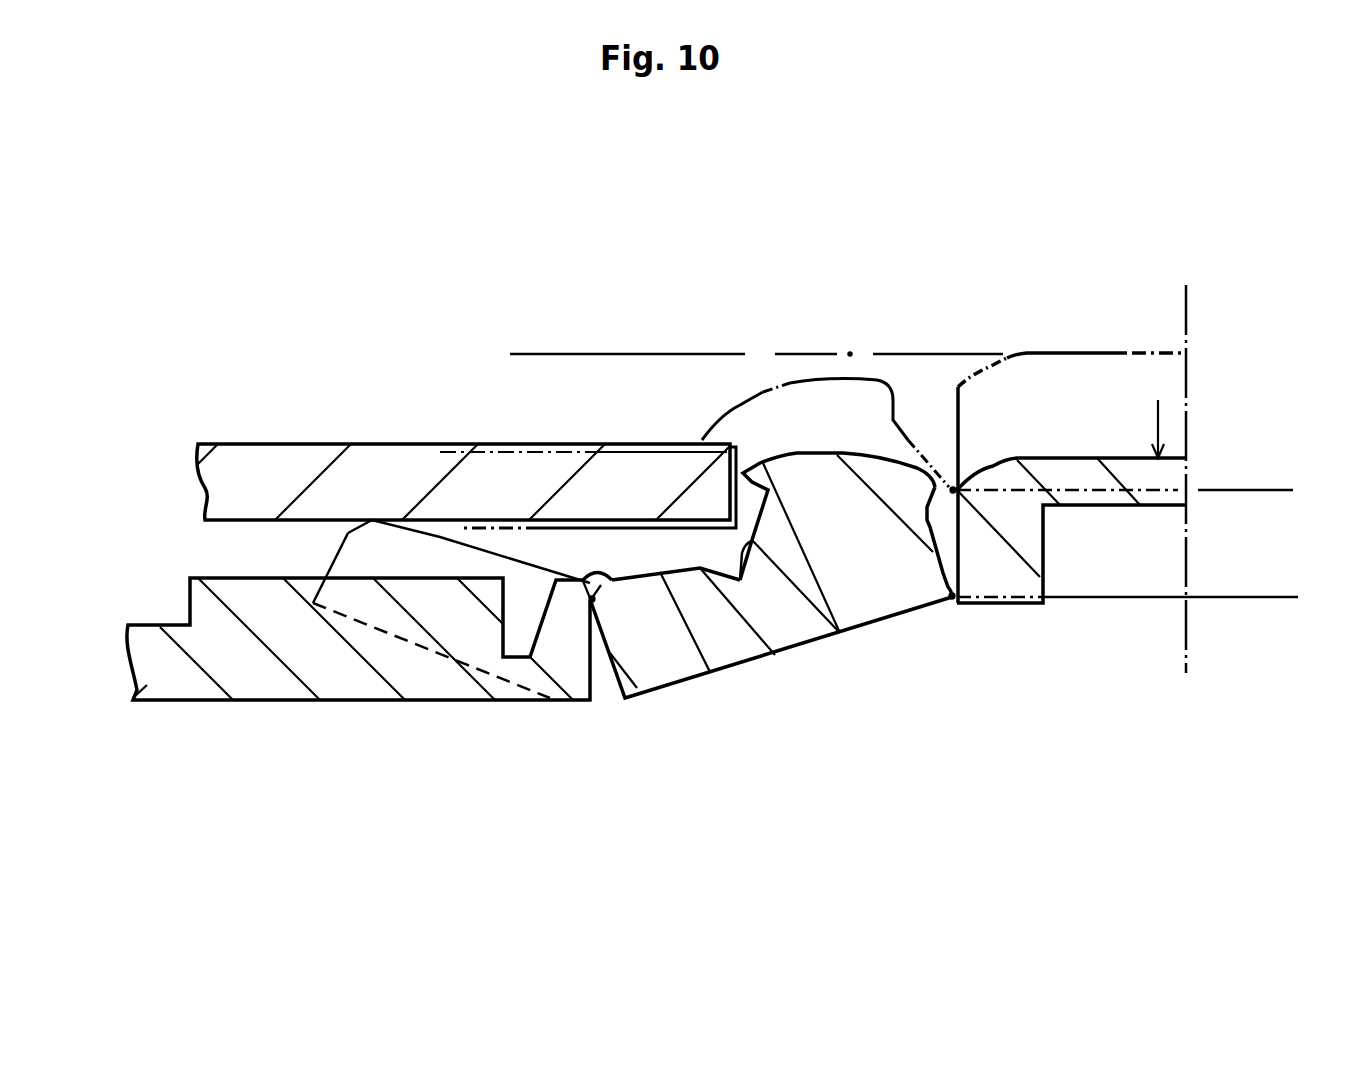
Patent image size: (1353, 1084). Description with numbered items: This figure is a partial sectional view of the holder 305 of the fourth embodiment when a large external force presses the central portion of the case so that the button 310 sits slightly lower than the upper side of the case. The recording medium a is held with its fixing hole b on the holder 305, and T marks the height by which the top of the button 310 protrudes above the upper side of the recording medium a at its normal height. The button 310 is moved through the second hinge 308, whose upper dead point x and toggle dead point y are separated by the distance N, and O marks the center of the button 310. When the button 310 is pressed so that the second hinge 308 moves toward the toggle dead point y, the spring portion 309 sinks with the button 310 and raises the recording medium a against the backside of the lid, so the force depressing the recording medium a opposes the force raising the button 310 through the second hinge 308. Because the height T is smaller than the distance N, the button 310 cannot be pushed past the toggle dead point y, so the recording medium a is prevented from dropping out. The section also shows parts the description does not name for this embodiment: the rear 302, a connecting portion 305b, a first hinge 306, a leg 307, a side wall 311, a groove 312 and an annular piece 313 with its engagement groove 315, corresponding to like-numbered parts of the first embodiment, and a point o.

The housing 302 is at (160, 700).
The holder 305 is at (928, 340).
The seal tip portion 305b is at (550, 610).
The lip portion 306 is at (620, 582).
The base portion 307 is at (913, 603).
The second hinge 308 is at (953, 563).
The spring portion 309 is at (370, 560).
The button 310 is at (1077, 355).
The step portion 311 is at (1033, 550).
The inclined face 312 is at (940, 540).
The projection 313 is at (800, 470).
The lip 315 is at (740, 578).
The disc-shaped recording medium a is at (232, 460).
The fixing hole b is at (732, 465).
The contact point o is at (589, 605).
The upper dead point x is at (938, 436).
The toggle dead point y is at (958, 596).
The center O is at (1183, 298).
The height of the top of the button T is at (523, 354).
The distance between the upper dead point and the toggle dead point N is at (1283, 490).